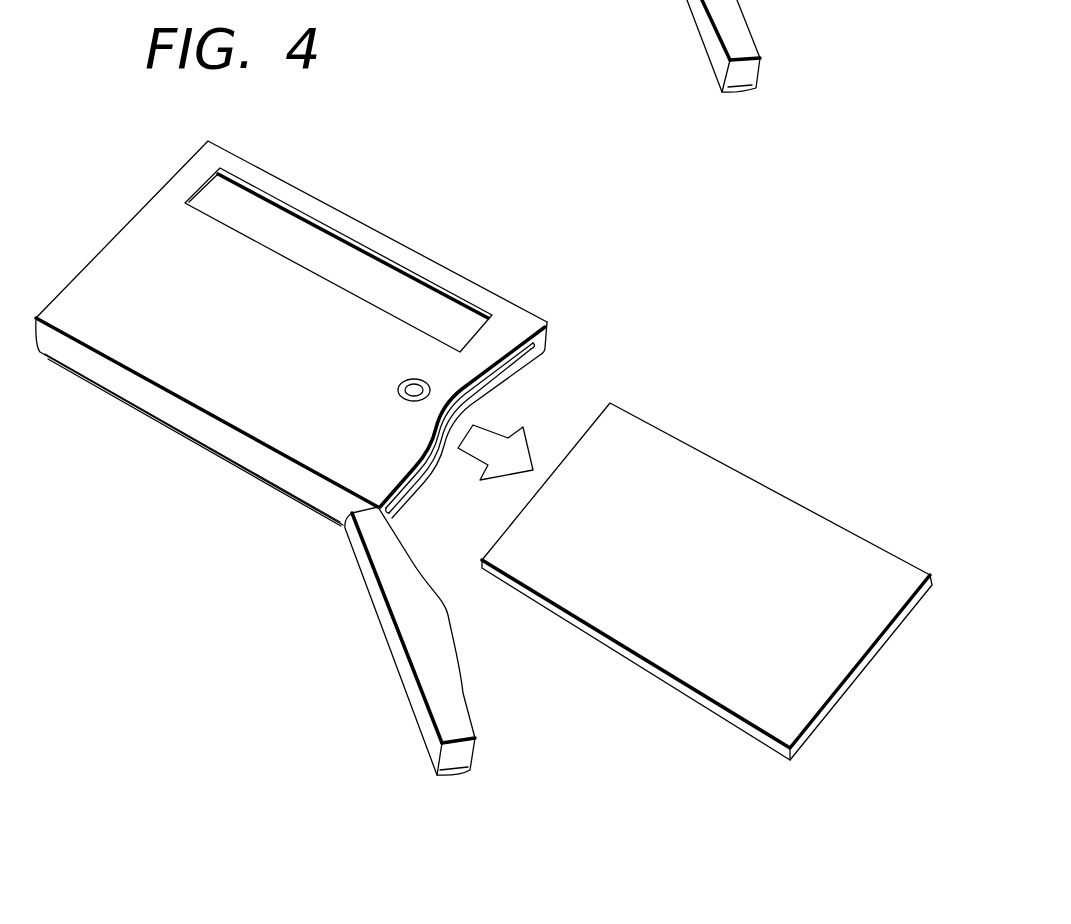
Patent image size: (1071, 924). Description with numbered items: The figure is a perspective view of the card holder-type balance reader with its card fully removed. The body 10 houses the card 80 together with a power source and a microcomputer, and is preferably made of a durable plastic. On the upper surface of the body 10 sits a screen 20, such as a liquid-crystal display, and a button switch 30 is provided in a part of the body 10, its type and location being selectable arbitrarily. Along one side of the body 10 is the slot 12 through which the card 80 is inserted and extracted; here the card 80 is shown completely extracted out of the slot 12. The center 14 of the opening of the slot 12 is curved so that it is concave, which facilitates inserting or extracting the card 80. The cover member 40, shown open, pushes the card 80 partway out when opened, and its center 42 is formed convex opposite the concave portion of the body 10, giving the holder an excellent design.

The body 10 is at (150, 403).
The slot 12 is at (527, 362).
The center of the opening of the slot 14 is at (465, 418).
The screen 20 is at (365, 265).
The button switch 30 is at (417, 378).
The cover member 40 is at (392, 637).
The center inside the cover member 42 is at (447, 623).
The card 80 is at (757, 480).